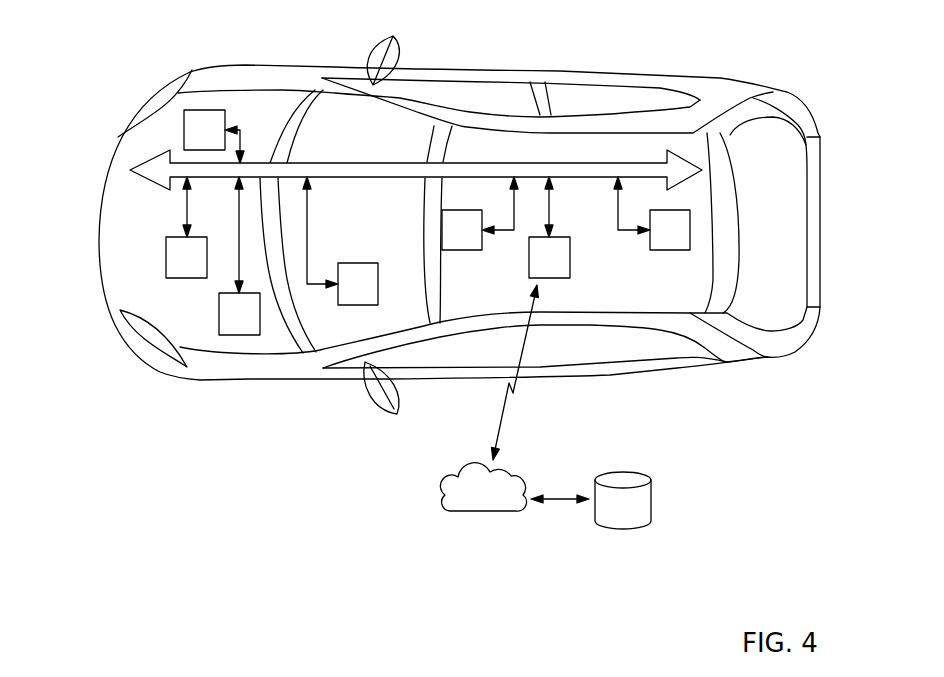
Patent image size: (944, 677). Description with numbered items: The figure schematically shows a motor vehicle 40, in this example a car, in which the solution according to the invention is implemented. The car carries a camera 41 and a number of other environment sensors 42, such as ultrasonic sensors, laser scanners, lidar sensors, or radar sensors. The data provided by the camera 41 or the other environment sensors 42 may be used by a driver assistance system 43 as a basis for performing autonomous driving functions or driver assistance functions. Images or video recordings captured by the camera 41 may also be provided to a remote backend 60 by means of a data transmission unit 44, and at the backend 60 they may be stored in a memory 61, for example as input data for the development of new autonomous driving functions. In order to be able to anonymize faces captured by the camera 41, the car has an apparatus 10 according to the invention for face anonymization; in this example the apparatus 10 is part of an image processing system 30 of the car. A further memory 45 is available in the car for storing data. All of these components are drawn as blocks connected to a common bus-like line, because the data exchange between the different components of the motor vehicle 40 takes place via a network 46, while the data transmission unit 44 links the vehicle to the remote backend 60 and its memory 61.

The apparatus for face anonymization 10 is at (205, 110).
The image processing system 30 is at (353, 305).
The motor vehicle 40 is at (713, 78).
The camera 41 is at (462, 252).
The environment sensors 42 is at (187, 278).
The driver assistance system 43 is at (237, 335).
The data transmission unit 44 is at (550, 279).
The memory 45 is at (670, 251).
The network 46 is at (590, 168).
The remote backend 60 is at (440, 505).
The memory 61 is at (620, 528).